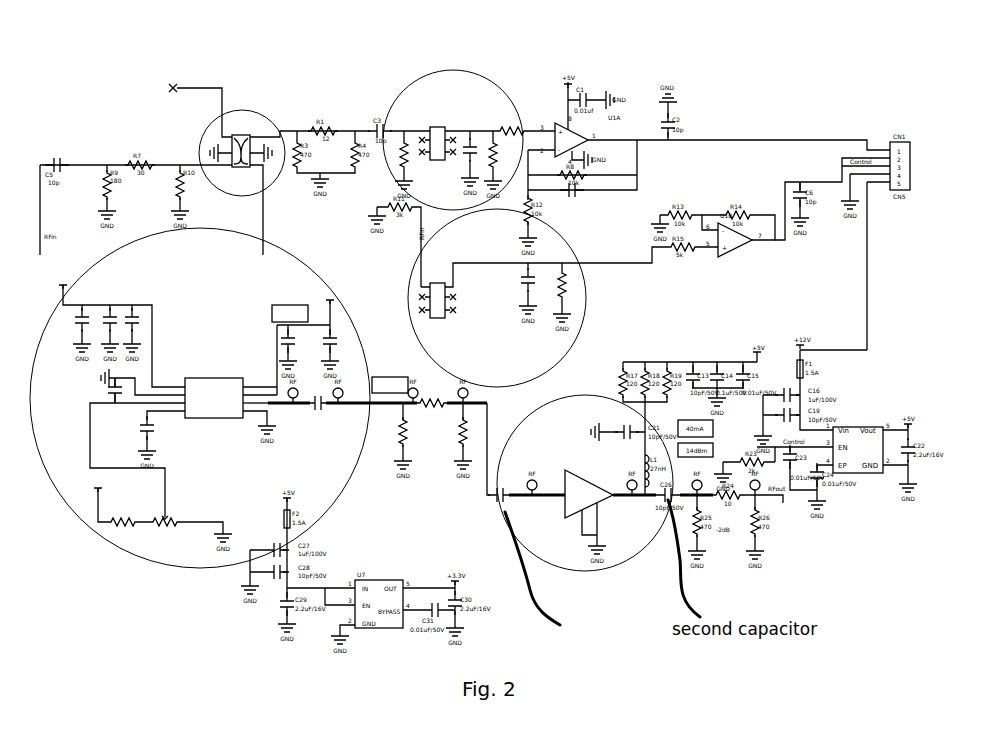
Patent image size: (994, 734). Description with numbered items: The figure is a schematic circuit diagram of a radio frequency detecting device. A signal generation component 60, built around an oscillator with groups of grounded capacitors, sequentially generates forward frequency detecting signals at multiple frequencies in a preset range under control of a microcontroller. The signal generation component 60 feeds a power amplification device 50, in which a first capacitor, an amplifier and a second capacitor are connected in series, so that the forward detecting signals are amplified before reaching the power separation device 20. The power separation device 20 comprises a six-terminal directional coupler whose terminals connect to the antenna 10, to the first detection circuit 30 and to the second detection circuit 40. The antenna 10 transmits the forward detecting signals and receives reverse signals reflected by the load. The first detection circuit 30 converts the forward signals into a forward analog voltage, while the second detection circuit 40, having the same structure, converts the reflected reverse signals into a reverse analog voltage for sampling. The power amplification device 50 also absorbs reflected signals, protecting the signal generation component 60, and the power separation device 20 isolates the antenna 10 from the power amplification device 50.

The antenna 10 is at (175, 88).
The power separation device 20 is at (255, 112).
The first detection circuit 30 is at (562, 340).
The second detection circuit 40 is at (462, 103).
The power amplification device 50 is at (595, 560).
The signal generation component 60 is at (178, 553).